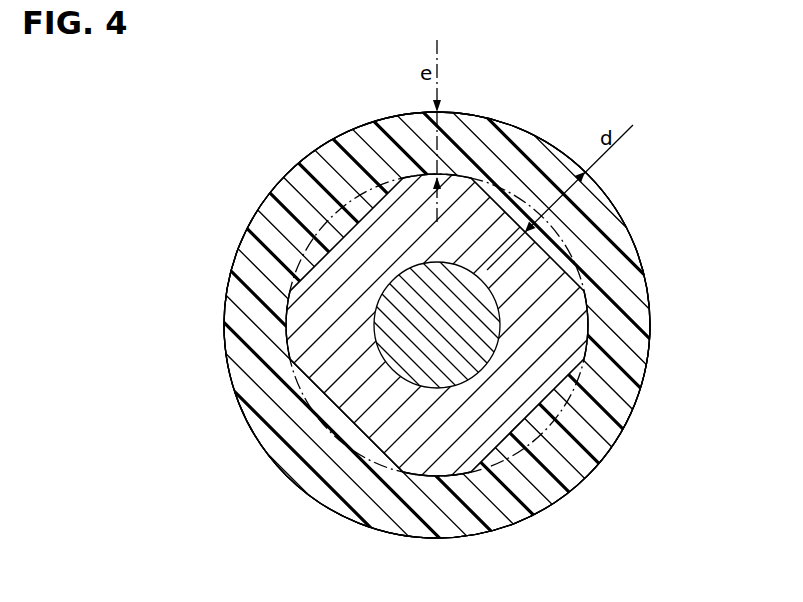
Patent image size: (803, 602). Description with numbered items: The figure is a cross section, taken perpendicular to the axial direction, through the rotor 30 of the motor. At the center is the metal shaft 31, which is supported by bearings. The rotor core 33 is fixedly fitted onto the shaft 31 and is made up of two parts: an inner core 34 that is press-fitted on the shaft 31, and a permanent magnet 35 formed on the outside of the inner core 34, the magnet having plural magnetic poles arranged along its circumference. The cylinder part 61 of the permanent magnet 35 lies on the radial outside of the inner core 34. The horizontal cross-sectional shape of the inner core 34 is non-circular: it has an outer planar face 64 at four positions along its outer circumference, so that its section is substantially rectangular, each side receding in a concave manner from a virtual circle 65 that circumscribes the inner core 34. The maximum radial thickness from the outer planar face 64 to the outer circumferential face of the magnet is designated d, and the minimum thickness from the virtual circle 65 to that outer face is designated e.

The rotor 30 is at (263, 178).
The shaft 31 is at (460, 360).
The rotor core 33 is at (717, 207).
The inner core 34 is at (530, 317).
The permanent magnet 35 is at (608, 226).
The cylinder part 61 is at (458, 118).
The outer planar face 64 is at (333, 200).
The virtual circle 65 is at (367, 190).